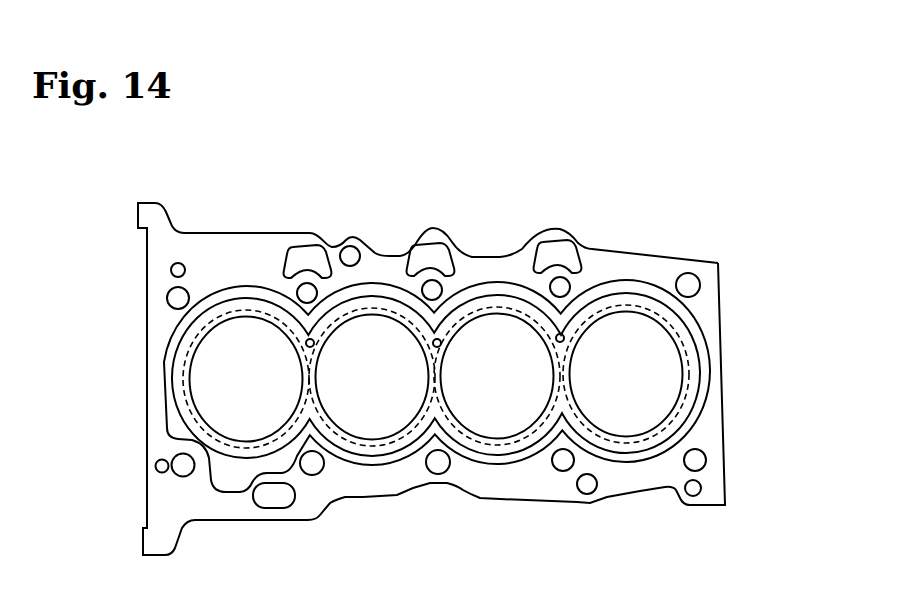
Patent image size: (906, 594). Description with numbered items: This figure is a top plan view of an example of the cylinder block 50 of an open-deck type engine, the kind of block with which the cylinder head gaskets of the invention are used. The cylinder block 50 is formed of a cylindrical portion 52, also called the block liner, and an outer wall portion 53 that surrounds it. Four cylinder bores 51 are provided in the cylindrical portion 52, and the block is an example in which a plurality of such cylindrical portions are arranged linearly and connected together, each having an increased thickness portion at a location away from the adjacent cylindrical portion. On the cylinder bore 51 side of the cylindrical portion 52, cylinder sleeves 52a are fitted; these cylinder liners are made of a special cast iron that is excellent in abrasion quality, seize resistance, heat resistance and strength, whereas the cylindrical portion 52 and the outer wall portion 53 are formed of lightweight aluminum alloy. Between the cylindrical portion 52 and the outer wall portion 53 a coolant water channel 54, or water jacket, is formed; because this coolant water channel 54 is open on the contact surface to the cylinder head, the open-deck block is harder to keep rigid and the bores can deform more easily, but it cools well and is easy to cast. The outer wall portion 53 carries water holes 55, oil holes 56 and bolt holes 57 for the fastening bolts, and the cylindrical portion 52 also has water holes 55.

The cylinder block 50 is at (438, 372).
The cylinder bore 51 is at (236, 384).
The cylindrical portion 52 is at (496, 455).
The cylinder sleeve 52a is at (712, 336).
The outer wall portion 53 is at (487, 268).
The coolant water channel 54 is at (388, 465).
The water hole 55 is at (275, 494).
The oil hole 56 is at (309, 258).
The bolt hole 57 is at (690, 274).